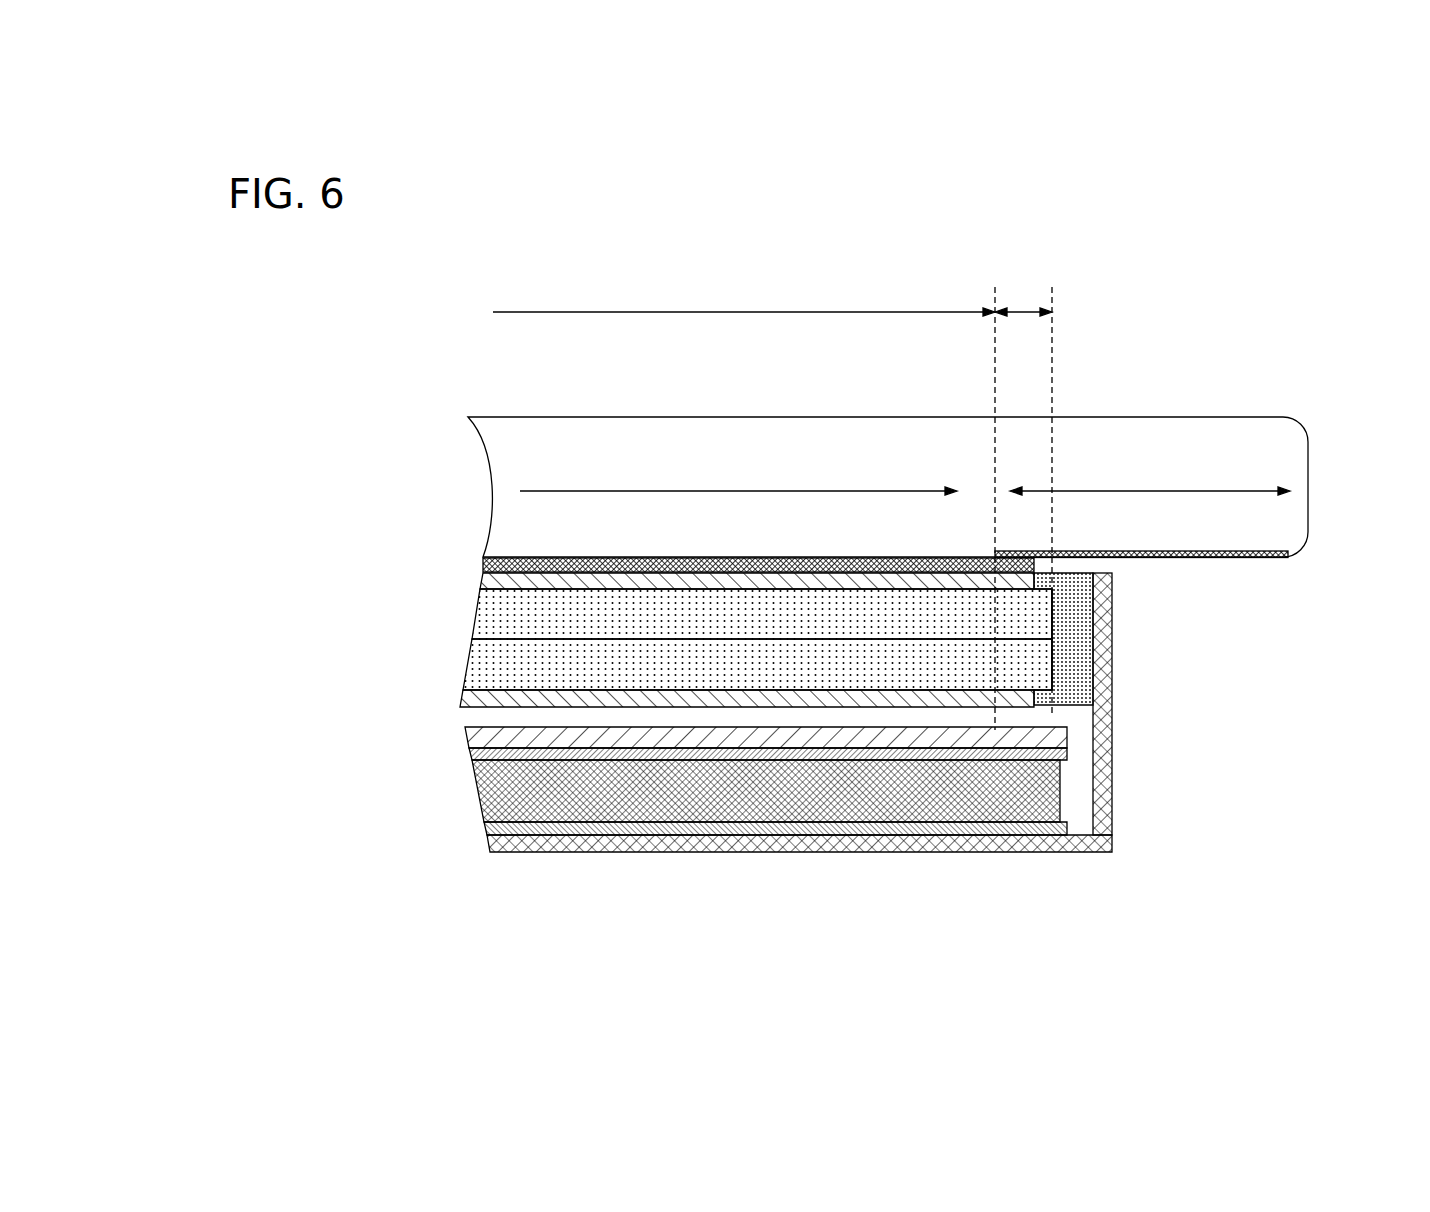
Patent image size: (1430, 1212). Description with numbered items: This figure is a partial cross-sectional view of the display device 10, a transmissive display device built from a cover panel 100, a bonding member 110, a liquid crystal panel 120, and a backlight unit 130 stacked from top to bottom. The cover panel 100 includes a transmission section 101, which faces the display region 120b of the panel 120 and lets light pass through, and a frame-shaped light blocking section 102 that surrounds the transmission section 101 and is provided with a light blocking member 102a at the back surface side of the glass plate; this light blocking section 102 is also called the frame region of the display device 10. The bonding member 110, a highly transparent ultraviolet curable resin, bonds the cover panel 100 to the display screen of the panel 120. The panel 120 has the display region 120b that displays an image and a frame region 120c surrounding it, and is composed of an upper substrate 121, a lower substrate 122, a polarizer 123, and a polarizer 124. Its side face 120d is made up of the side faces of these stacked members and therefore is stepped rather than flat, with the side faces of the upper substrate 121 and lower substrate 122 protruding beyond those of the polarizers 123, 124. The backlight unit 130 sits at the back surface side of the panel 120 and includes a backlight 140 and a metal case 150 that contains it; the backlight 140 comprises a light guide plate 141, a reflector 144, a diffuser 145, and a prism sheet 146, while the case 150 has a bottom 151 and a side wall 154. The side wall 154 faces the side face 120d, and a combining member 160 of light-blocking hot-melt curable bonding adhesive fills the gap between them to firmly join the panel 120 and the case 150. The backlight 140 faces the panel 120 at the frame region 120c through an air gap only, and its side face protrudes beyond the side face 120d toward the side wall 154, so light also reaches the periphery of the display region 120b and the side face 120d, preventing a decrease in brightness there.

The display device 10 is at (956, 210).
The cover panel 100 is at (505, 416).
The transmission section 101 is at (706, 491).
The light blocking section 102 is at (1170, 491).
The light blocking member 102a is at (1250, 553).
The bonding member 110 is at (625, 558).
The panel 120 is at (483, 573).
The display region 120b is at (613, 312).
The frame region 120c is at (1022, 312).
The side face 120d is at (1052, 640).
The upper substrate 121 is at (1025, 612).
The lower substrate 122 is at (1025, 665).
The polarizer 123 is at (1028, 584).
The polarizer 124 is at (1022, 697).
The backlight unit 130 is at (490, 850).
The backlight 140 is at (487, 833).
The light guide plate 141 is at (737, 787).
The reflector 144 is at (865, 852).
The diffuser 145 is at (617, 757).
The prism sheet 146 is at (541, 737).
The case 150 is at (923, 755).
The bottom 151 is at (1080, 850).
The side wall 154 is at (1112, 833).
The combining member 160 is at (1047, 705).